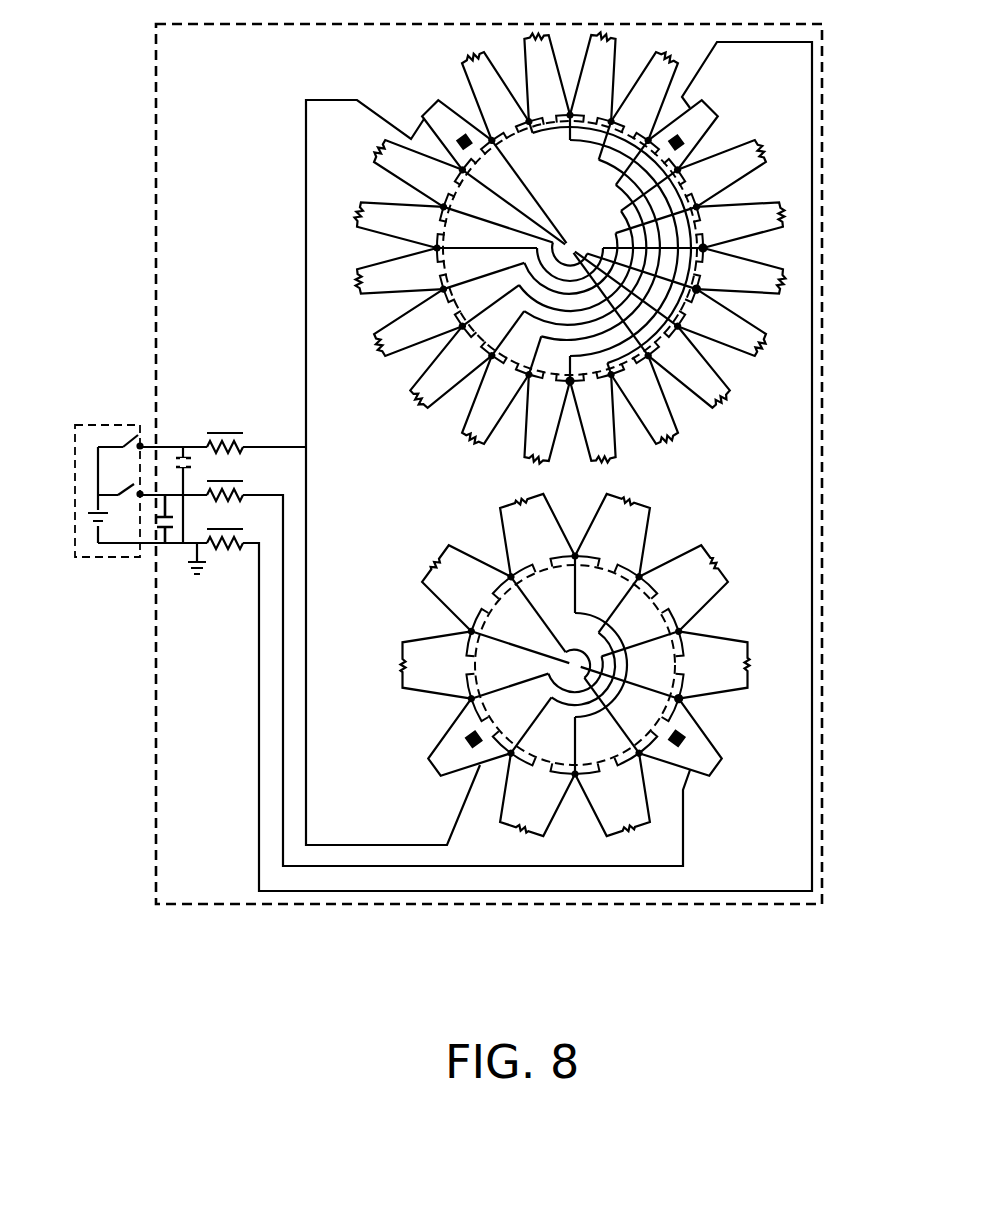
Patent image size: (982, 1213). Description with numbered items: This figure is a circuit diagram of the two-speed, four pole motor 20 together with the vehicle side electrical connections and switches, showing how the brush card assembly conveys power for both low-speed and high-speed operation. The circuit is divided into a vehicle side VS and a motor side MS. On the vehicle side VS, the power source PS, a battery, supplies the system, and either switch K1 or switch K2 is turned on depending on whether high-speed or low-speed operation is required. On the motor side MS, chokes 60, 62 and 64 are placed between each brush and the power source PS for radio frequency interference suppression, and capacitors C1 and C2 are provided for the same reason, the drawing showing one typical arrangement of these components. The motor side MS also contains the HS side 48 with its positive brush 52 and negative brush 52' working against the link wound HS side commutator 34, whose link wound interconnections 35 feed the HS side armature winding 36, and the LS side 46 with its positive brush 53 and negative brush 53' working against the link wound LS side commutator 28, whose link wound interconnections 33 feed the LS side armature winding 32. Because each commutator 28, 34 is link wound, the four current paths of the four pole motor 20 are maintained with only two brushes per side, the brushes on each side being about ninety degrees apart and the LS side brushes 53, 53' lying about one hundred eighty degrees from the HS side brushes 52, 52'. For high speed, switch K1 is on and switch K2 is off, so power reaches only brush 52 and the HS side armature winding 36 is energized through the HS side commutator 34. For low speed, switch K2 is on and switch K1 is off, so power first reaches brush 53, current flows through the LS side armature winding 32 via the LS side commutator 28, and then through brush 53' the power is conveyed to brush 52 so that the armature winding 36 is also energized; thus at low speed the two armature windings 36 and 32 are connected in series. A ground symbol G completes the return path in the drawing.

The motor 20 is at (822, 766).
The LS side commutator 28 is at (721, 695).
The LS side armature winding 32 is at (770, 652).
The link wound interconnections 33 is at (575, 803).
The HS side commutator 34 is at (724, 279).
The link wound interconnections 35 is at (560, 426).
The HS side armature winding 36 is at (779, 214).
The LS side 46 is at (624, 671).
The HS side 48 is at (606, 257).
The positive brush 52 is at (458, 111).
The negative brush 52' is at (722, 136).
The positive brush 53 is at (707, 746).
The negative brush 53' is at (449, 746).
The choke 60 is at (222, 428).
The choke 62 is at (234, 478).
The choke 64 is at (222, 562).
The switch K1 is at (134, 438).
The switch K2 is at (130, 486).
The capacitor C1 is at (183, 446).
The capacitor C2 is at (163, 533).
The power source PS is at (109, 497).
The vehicle side VS is at (96, 560).
The motor side MS is at (457, 464).
The ground G is at (199, 580).